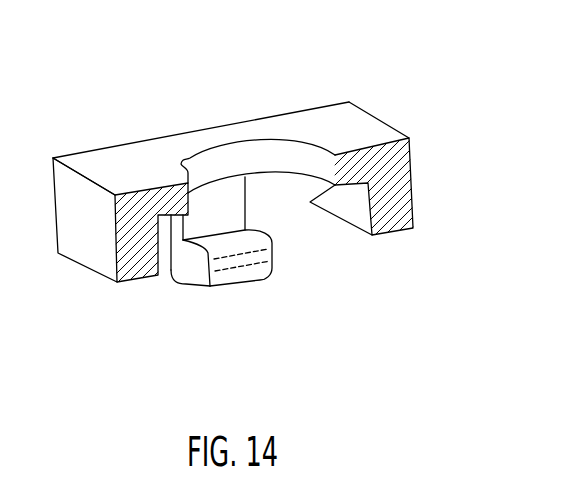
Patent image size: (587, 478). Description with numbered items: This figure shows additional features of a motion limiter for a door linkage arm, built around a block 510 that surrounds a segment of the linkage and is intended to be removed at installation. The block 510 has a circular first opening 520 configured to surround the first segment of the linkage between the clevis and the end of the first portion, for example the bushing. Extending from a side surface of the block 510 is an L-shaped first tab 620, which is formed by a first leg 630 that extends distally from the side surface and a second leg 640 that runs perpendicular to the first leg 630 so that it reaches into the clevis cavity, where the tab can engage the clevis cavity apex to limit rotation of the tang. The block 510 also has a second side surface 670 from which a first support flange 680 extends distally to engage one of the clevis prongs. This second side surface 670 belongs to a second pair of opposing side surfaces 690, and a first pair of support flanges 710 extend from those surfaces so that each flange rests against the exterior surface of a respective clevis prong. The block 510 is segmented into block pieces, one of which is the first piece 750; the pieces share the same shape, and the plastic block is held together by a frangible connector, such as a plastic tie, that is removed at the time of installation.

The block 510 is at (117, 122).
The first opening 520 is at (313, 165).
The first leg 630 is at (213, 205).
The first tab 620 is at (237, 213).
The second leg 640 is at (241, 273).
The second side surface 670 is at (123, 218).
The first support flange 680 is at (135, 263).
The second pair of opposing side surfaces 690 is at (414, 171).
The first pair of support flanges 710 is at (400, 212).
The first piece 750 is at (280, 115).